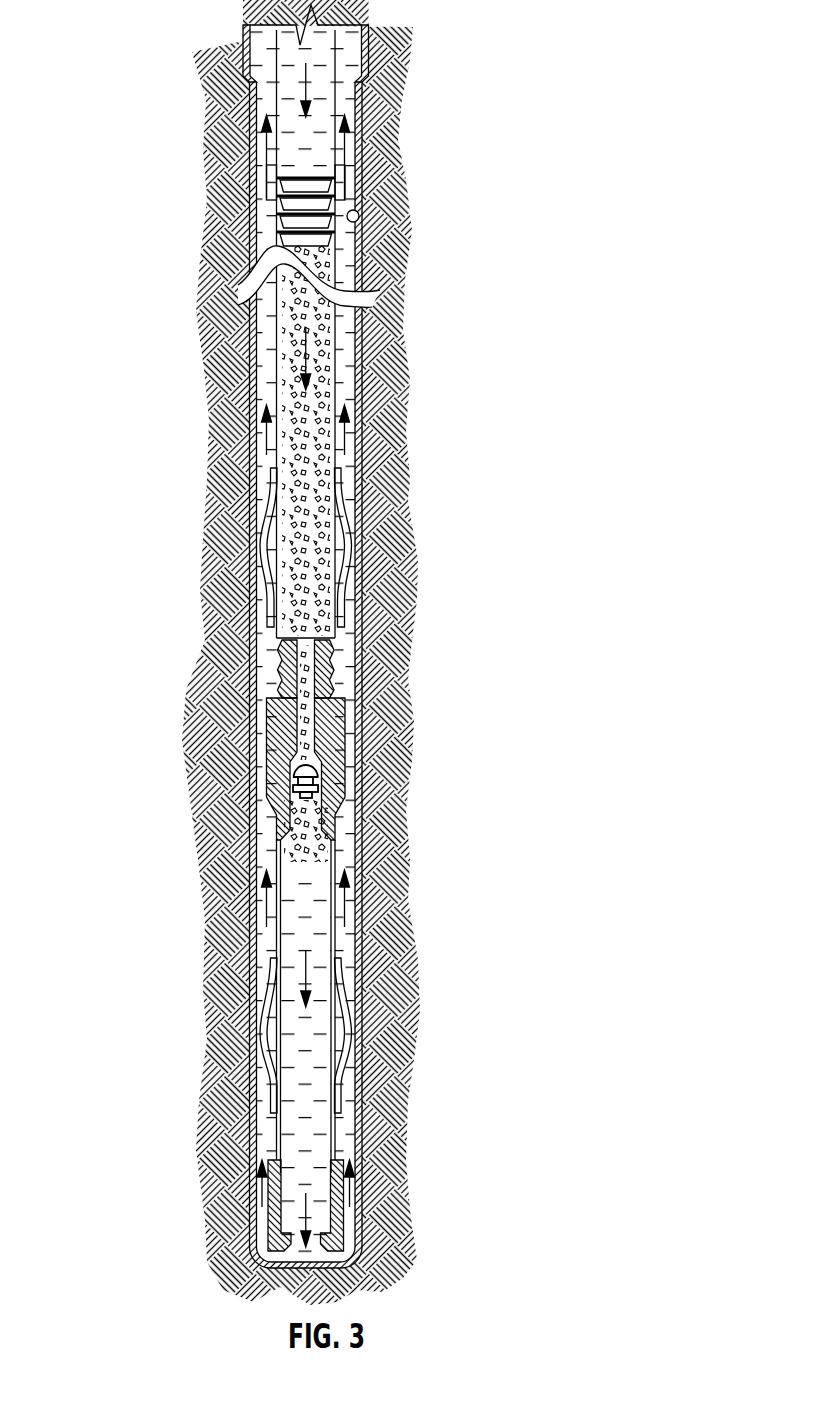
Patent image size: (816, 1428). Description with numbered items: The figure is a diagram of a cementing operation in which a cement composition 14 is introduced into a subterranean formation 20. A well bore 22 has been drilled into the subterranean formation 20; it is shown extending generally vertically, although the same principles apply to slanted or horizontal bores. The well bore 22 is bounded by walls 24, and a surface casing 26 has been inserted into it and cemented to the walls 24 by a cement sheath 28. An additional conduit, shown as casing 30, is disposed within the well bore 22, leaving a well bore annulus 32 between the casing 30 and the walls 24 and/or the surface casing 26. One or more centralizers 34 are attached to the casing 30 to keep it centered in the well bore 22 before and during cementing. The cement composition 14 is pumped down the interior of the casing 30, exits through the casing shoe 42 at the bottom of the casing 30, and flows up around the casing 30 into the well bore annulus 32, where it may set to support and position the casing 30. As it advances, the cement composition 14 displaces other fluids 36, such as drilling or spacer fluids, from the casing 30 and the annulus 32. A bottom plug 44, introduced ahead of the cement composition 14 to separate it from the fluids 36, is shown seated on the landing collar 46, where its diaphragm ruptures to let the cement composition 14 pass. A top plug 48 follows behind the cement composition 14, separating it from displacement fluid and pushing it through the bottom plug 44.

The cement composition 14 is at (335, 363).
The subterranean formation 20 is at (308, 652).
The well bore 22 is at (361, 560).
The walls 24 is at (359, 214).
The surface casing 26 is at (347, 58).
The cement sheath 28 is at (362, 97).
The casing 30 is at (348, 465).
The well bore annulus 32 is at (265, 462).
The centralizers 34 is at (262, 997).
The fluids 36 is at (337, 985).
The casing shoe 42 is at (264, 1218).
The bottom plug 44 is at (283, 668).
The landing collar 46 is at (262, 770).
The top plug 48 is at (262, 256).